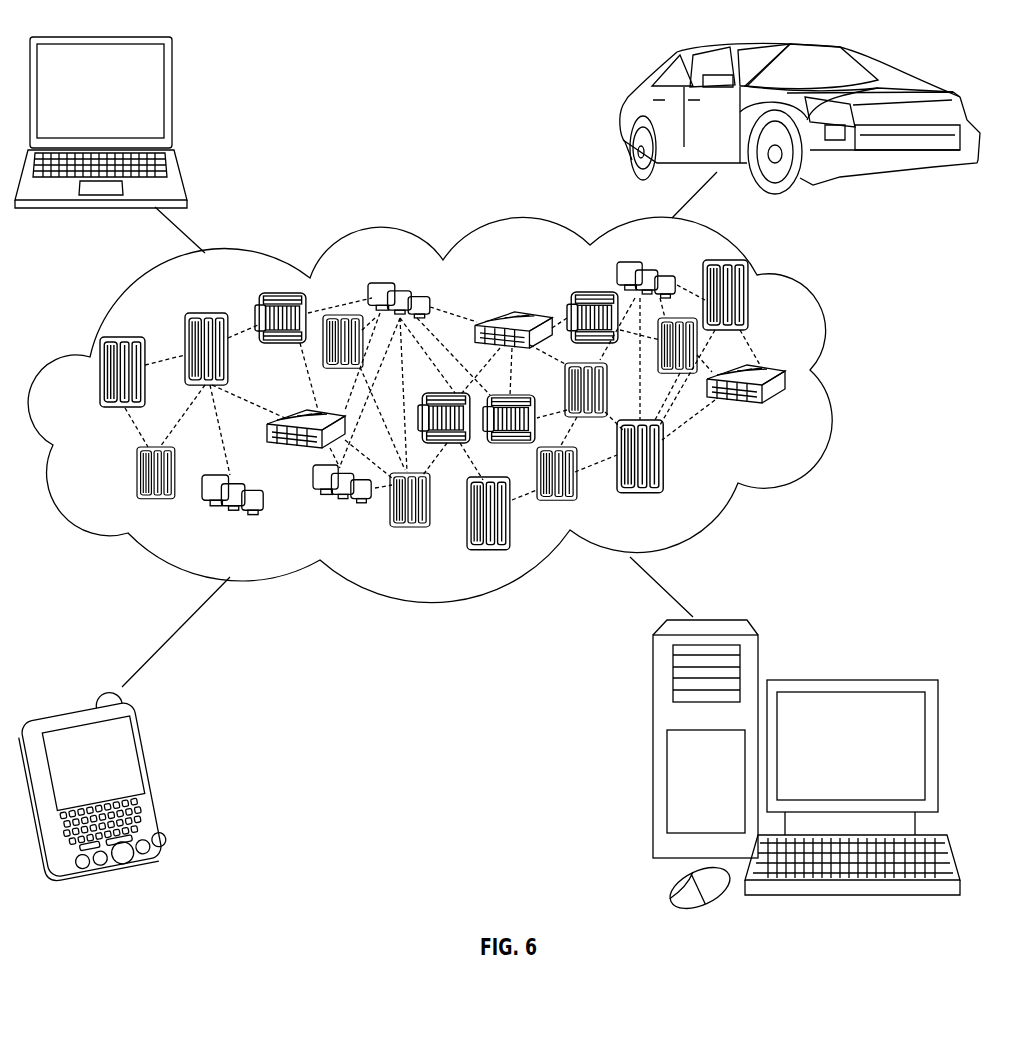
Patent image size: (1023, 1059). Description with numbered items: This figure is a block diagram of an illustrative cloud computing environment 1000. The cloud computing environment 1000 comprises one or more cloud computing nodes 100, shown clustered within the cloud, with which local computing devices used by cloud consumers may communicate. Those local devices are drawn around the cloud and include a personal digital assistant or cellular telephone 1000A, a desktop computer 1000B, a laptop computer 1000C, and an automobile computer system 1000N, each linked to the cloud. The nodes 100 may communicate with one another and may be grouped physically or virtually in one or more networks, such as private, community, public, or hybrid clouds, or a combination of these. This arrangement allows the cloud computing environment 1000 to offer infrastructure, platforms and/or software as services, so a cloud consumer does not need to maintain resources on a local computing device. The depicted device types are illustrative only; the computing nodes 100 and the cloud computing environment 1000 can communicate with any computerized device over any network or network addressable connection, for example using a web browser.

The cloud computing nodes 100 is at (790, 415).
The cloud computing environment 1000 is at (852, 382).
The personal digital assistant (PDA) or cellular telephone 1000A is at (163, 778).
The desktop computer 1000B is at (848, 678).
The laptop computer 1000C is at (175, 102).
The automobile computer system 1000N is at (623, 120).